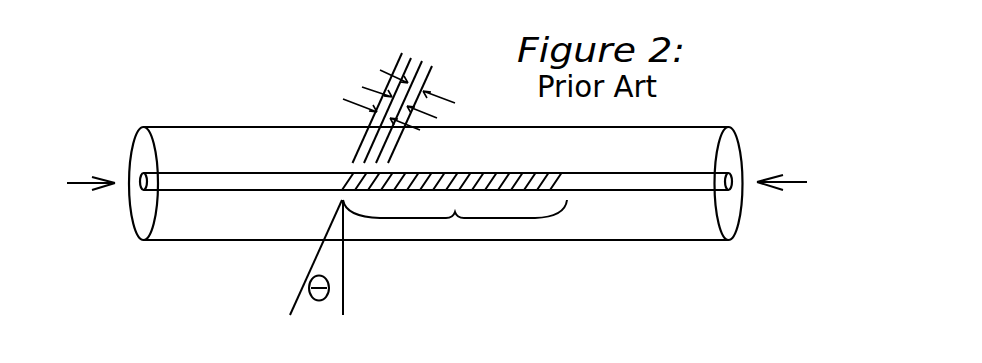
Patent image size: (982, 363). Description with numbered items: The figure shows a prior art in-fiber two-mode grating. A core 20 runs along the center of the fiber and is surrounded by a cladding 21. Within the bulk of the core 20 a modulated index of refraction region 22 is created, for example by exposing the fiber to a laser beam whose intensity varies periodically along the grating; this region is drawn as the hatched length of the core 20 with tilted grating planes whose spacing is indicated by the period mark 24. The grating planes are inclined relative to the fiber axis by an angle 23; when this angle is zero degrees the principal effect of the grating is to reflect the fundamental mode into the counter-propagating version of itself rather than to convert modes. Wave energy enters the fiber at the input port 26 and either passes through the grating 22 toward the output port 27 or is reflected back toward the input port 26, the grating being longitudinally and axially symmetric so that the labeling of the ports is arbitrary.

The core 20 is at (145, 192).
The cladding 21 is at (145, 123).
The modulated index of refraction region 22 is at (455, 218).
The angle 23 is at (316, 266).
The grating period Lambda / grating planes 24 is at (348, 82).
The input port 26 is at (74, 184).
The output port 27 is at (802, 179).